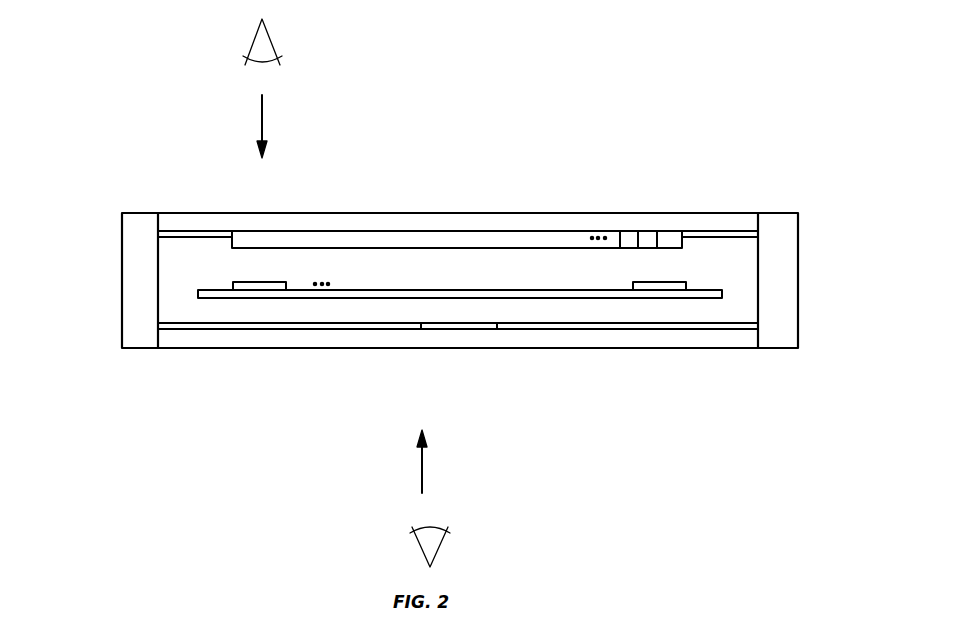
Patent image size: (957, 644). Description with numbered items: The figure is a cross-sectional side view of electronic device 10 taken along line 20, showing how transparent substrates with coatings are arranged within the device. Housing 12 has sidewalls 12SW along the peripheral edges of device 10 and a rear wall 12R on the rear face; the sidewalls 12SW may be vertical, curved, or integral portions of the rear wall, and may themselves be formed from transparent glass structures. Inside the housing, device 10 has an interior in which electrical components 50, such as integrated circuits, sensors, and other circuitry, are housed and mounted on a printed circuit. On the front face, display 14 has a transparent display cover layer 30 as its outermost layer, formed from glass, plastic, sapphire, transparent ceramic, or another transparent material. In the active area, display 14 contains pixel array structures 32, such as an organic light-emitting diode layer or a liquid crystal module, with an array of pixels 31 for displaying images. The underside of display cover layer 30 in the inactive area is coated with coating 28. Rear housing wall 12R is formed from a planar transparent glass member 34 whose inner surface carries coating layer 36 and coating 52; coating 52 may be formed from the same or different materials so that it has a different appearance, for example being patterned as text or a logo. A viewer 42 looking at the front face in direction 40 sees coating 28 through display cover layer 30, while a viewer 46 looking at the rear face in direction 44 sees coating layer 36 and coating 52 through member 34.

The electronic device 10 is at (697, 110).
The housing 12 is at (817, 208).
The sidewalls 12SW is at (130, 311).
The rear wall 12R is at (707, 353).
The display 14 is at (458, 201).
The line 20 is at (387, 295).
The coating 28 is at (173, 233).
The display cover layer 30 is at (368, 222).
The pixels 31 is at (650, 232).
The pixel array structures 32 is at (437, 240).
The transparent glass member 34 is at (372, 342).
The coating layer 36 is at (257, 326).
The direction 40 is at (262, 122).
The viewer 42 is at (269, 38).
The direction 44 is at (422, 469).
The viewer 46 is at (438, 552).
The electrical components 50 is at (235, 286).
The coating 52 is at (442, 326).